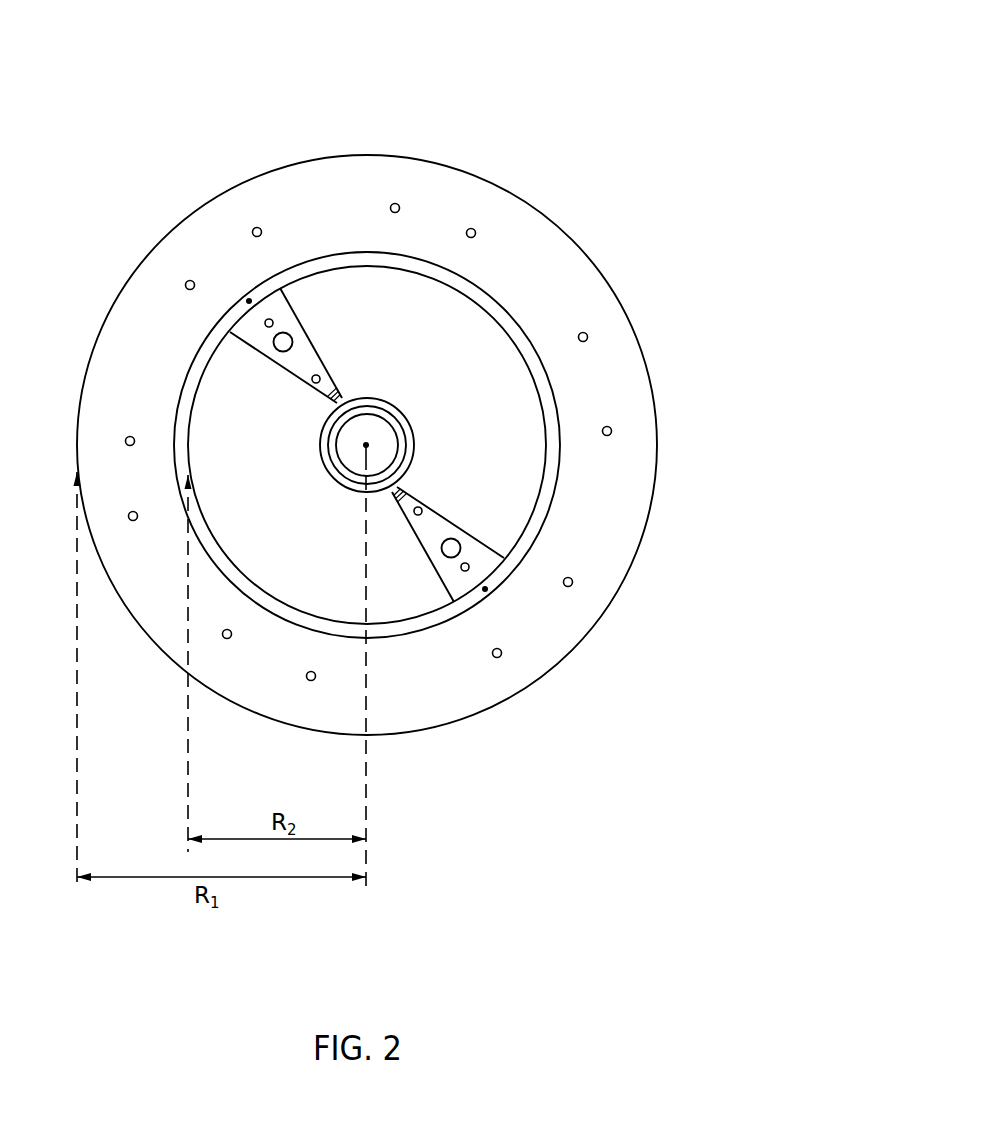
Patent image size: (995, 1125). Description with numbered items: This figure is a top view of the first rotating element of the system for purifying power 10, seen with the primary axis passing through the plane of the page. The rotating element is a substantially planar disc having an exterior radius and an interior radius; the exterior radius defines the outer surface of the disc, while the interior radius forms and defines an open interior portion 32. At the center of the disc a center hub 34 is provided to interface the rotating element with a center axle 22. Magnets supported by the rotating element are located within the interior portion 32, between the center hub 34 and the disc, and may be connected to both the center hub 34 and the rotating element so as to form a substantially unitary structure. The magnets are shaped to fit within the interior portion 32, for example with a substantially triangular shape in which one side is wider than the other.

The system for purifying power 10 is at (654, 108).
The center axle 22 is at (386, 446).
The open interior portion 32 is at (367, 445).
The center hub 34 is at (414, 442).